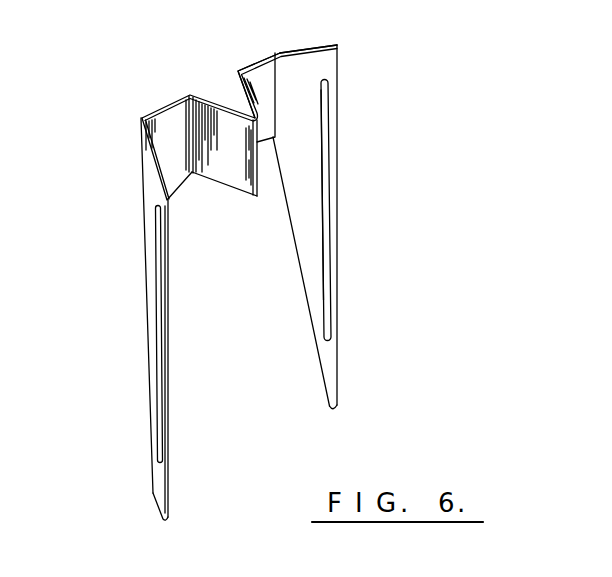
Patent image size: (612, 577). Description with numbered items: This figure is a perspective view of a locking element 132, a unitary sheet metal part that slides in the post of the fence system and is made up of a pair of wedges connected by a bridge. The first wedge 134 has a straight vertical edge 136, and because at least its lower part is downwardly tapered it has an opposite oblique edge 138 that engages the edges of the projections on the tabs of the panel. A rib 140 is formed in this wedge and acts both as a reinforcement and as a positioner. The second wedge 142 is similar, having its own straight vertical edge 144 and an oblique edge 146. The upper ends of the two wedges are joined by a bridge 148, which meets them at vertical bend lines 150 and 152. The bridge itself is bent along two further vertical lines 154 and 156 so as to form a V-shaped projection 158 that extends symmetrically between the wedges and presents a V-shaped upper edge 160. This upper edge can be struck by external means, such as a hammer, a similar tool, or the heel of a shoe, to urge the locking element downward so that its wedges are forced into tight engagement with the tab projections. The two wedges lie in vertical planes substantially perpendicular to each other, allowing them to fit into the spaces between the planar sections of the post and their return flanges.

The locking element 132 is at (350, 123).
The wedge 134 is at (310, 188).
The straight vertical edge 136 is at (339, 237).
The oblique edge 138 is at (295, 241).
The rib 140 is at (325, 262).
The wedge 142 is at (150, 277).
The straight vertical edge 144 is at (170, 368).
The oblique edge 146 is at (146, 348).
The bridge 148 is at (146, 104).
The vertical bend line 150 is at (142, 163).
The vertical bend line 152 is at (280, 96).
The vertical bend line 154 is at (191, 162).
The vertical bend line 156 is at (228, 80).
The V-shaped projection 158 is at (230, 172).
The V-shaped upper edge 160 is at (212, 98).